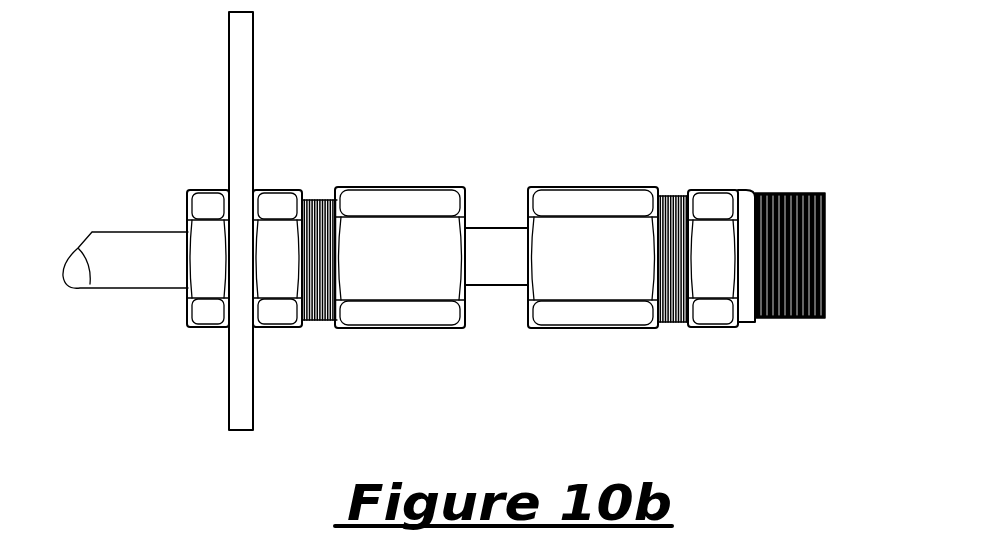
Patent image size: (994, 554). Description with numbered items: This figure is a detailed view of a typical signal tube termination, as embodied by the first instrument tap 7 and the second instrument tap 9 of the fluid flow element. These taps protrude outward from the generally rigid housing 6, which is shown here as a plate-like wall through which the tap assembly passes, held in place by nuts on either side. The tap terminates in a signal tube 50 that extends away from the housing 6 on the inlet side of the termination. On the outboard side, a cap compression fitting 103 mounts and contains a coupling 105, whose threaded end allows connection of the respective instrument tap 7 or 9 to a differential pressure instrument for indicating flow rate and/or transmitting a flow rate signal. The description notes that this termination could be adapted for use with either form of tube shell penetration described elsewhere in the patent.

The housing 6 is at (253, 123).
The first instrument tap 7 is at (469, 181).
The second instrument tap 9 is at (445, 186).
The tube 50 is at (138, 232).
The cap compression fitting 103 is at (595, 186).
The coupling 105 is at (753, 325).